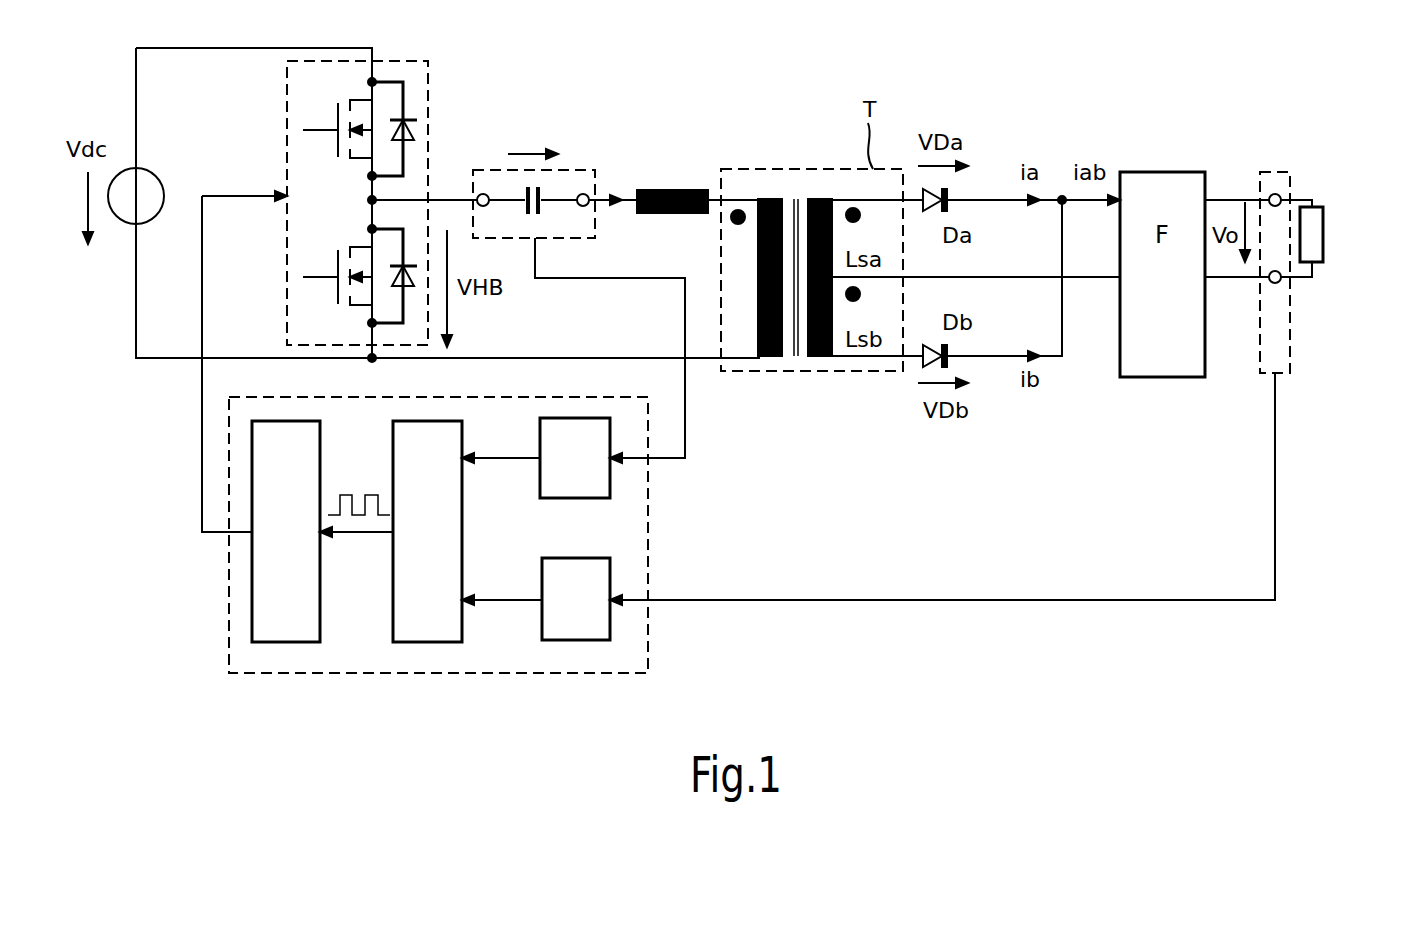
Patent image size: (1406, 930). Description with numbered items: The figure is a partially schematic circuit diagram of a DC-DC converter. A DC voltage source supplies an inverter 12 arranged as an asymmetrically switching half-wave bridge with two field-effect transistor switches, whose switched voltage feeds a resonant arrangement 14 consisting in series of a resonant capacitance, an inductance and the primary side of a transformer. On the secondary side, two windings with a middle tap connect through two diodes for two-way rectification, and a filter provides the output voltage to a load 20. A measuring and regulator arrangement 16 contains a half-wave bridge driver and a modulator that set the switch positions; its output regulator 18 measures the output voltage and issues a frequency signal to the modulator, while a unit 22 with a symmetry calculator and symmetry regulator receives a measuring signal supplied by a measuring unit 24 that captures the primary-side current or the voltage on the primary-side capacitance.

The inverter 12 is at (440, 84).
The resonant arrangement 14 is at (780, 125).
The measuring and regulator arrangement 16 is at (476, 535).
The output regulator 18 is at (590, 613).
The load 20 is at (1323, 240).
The unit 22 is at (575, 458).
The measuring unit 24 is at (595, 233).